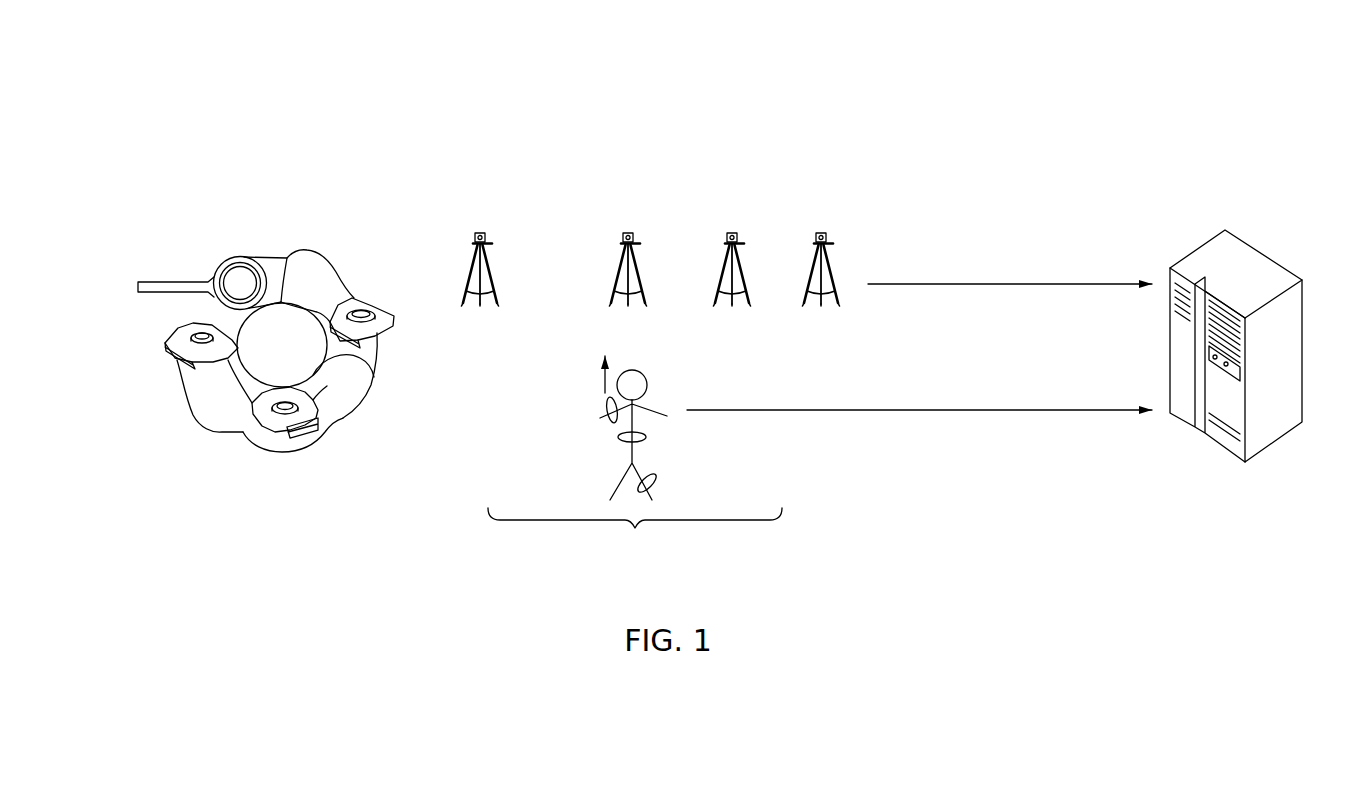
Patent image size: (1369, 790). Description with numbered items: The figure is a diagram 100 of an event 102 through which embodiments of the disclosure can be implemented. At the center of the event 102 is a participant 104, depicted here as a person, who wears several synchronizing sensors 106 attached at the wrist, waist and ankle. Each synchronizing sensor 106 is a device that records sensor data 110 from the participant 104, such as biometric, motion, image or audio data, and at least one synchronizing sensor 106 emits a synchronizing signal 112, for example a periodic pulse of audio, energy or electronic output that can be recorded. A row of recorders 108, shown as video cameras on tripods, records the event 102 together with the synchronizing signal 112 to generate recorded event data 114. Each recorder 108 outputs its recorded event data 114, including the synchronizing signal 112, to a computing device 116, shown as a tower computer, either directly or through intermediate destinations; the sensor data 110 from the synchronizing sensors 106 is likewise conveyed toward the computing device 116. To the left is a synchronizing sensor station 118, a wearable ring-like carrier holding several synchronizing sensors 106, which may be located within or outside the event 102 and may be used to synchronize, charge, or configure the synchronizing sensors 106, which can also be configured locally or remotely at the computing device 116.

The diagram 100 is at (157, 123).
The event 102 is at (635, 440).
The participant 104 is at (649, 387).
The synchronizing sensor 106 is at (178, 357).
The recorder 108 is at (820, 228).
The sensor data 110 is at (920, 405).
The synchronizing signal 112 is at (607, 366).
The recorded event data 114 is at (938, 278).
The computing device 116 is at (1170, 332).
The synchronizing sensor station 118 is at (290, 453).